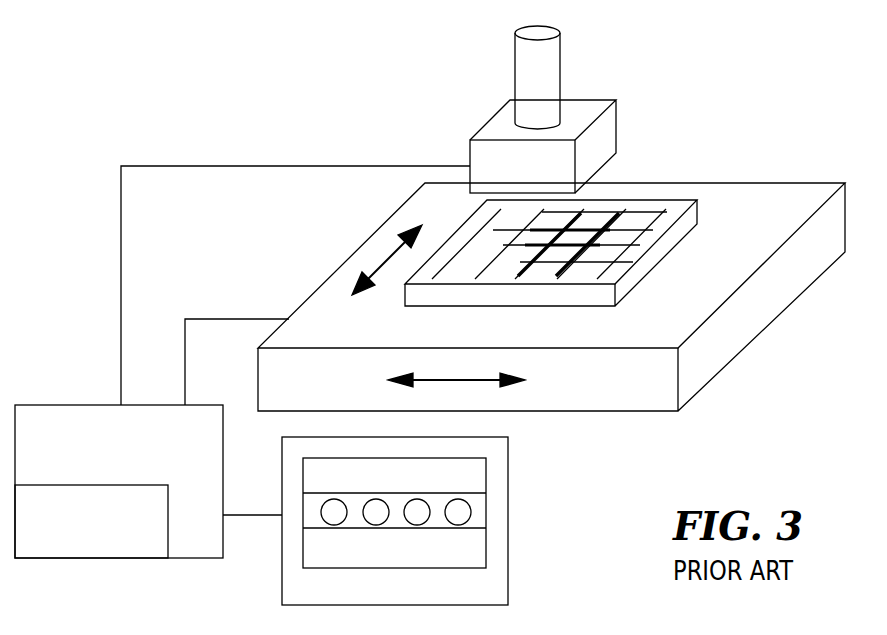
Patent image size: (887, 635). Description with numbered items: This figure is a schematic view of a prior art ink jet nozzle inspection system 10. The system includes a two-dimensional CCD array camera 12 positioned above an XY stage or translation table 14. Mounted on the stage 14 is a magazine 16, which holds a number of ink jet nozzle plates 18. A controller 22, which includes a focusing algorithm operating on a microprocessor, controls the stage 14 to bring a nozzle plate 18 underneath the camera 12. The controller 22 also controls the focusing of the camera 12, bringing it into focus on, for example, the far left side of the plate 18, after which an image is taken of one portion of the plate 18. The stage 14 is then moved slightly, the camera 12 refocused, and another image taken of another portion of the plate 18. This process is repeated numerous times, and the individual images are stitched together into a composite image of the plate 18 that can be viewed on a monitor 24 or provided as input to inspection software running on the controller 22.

The prior art ink jet nozzle inspection system 10 is at (761, 60).
The 2-D CCD array camera 12 is at (553, 55).
The XY stage or translation table 14 is at (747, 320).
The magazine 16 is at (677, 208).
The ink jet nozzle plate 18 is at (495, 233).
The controller 22 is at (70, 405).
The monitor 24 is at (508, 485).